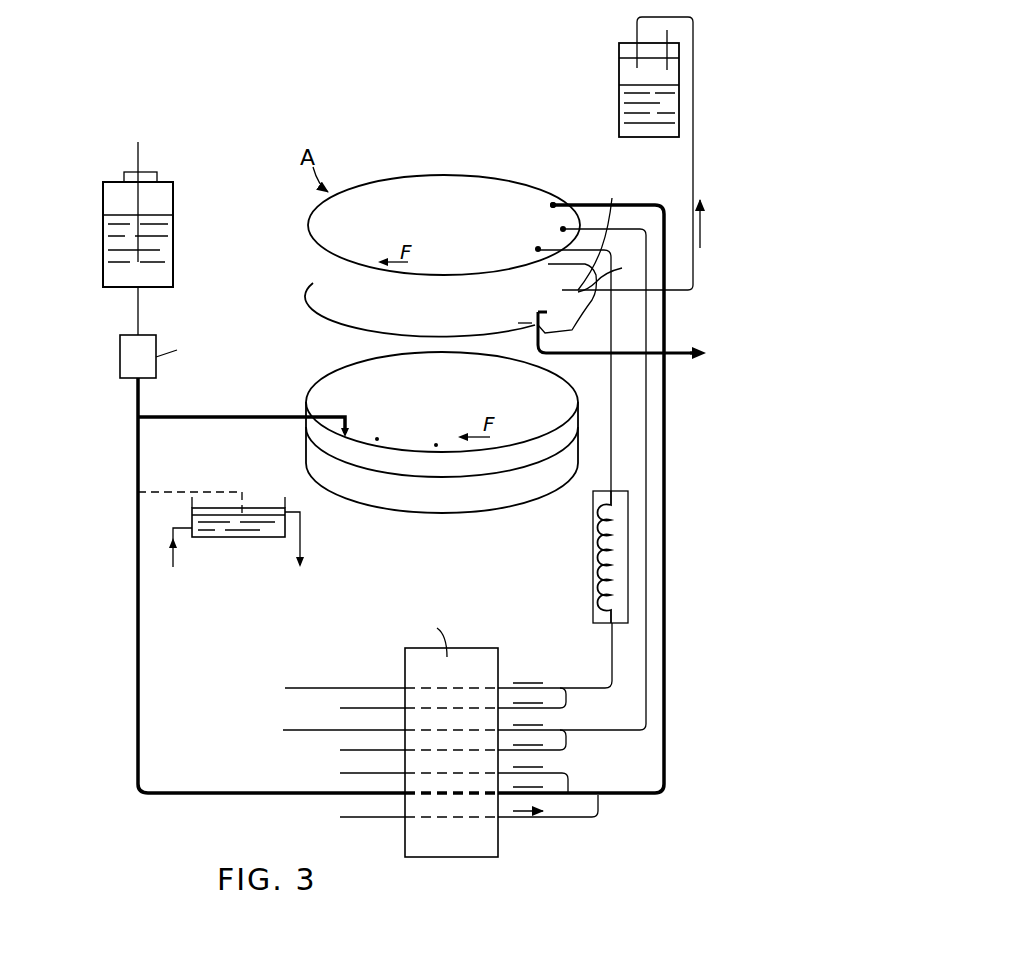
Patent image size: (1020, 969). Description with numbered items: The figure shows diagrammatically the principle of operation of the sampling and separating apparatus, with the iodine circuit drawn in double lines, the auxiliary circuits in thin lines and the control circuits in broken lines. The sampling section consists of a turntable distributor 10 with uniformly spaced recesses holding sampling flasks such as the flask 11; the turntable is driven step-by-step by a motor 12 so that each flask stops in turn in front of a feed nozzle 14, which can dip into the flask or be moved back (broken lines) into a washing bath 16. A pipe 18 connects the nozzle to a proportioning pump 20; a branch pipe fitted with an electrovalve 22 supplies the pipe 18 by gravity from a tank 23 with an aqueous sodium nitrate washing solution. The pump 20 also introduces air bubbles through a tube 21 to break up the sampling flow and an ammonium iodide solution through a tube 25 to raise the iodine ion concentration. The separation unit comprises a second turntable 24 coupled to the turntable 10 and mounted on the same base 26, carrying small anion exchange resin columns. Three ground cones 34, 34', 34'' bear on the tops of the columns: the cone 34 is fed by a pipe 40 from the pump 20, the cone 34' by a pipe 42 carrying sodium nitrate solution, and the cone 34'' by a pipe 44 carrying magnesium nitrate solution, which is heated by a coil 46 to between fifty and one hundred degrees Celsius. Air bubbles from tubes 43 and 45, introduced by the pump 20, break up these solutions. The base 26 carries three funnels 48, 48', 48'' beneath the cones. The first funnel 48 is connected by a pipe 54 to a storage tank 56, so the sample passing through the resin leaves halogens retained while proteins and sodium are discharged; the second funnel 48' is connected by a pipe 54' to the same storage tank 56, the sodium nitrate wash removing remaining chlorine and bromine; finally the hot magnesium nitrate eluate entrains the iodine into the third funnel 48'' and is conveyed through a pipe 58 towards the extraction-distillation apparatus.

The turntable distributor 10 is at (442, 414).
The sampling flask 11 is at (408, 443).
The motor 12 is at (442, 470).
The feed nozzle 14 is at (218, 416).
The washing bath 16 is at (215, 537).
The pipe 18 is at (140, 668).
The proportioning pump 20 is at (413, 735).
The tube 21 is at (570, 783).
The electrovalve 22 is at (177, 354).
The tank 23 is at (172, 258).
The second turntable 24 is at (444, 225).
The tube 25 is at (598, 812).
The base 26 is at (420, 310).
The ground cone 34 is at (521, 195).
The ground cone 34' is at (541, 217).
The ground cone 34'' is at (511, 242).
The pipe 40 is at (668, 487).
The pipe 42 is at (646, 452).
The tube 43 is at (566, 742).
The pipe 44 is at (612, 410).
The tube 45 is at (568, 700).
The coil 46 is at (597, 572).
The funnel 48 is at (539, 298).
The funnel 48' is at (605, 161).
The funnel 48'' is at (622, 331).
The pipe 54 is at (607, 231).
The pipe 54' is at (617, 266).
The storage tank 56 is at (620, 116).
The pipe 58 is at (678, 355).